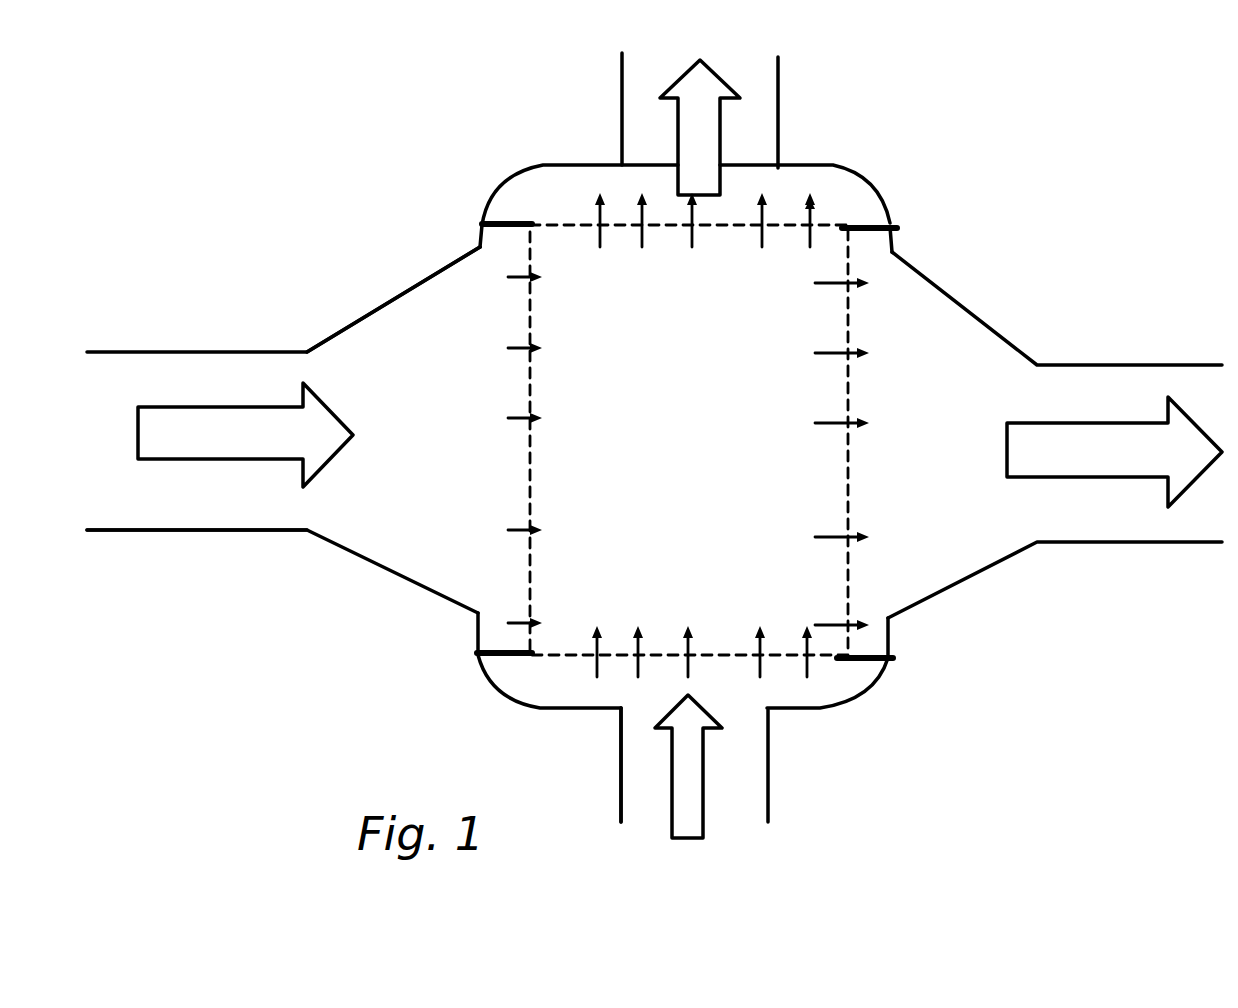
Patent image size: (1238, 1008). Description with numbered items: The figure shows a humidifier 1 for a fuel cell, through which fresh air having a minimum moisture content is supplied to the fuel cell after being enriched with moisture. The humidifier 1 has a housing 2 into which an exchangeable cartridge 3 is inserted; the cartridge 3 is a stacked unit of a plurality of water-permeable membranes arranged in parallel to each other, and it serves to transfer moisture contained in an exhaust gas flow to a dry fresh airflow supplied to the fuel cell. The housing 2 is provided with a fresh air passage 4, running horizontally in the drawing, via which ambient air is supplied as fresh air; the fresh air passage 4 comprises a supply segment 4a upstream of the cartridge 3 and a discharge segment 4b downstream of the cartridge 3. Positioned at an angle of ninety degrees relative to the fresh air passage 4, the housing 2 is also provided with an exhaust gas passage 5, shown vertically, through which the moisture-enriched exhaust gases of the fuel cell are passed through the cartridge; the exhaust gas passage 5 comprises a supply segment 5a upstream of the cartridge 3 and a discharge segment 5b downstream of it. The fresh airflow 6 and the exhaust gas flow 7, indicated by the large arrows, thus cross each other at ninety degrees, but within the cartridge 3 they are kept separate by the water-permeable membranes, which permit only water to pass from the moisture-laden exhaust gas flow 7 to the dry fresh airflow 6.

The humidifier 1 is at (402, 176).
The housing 2 is at (260, 355).
The cartridge 3 is at (850, 475).
The fresh air passage 4 is at (298, 537).
The supply segment 4a is at (160, 534).
The discharge segment 4b is at (1077, 545).
The exhaust gas passage 5 is at (776, 746).
The supply segment 5a is at (620, 770).
The discharge segment 5b is at (620, 105).
The fresh airflow 6 is at (223, 405).
The exhaust gas flow 7 is at (721, 138).